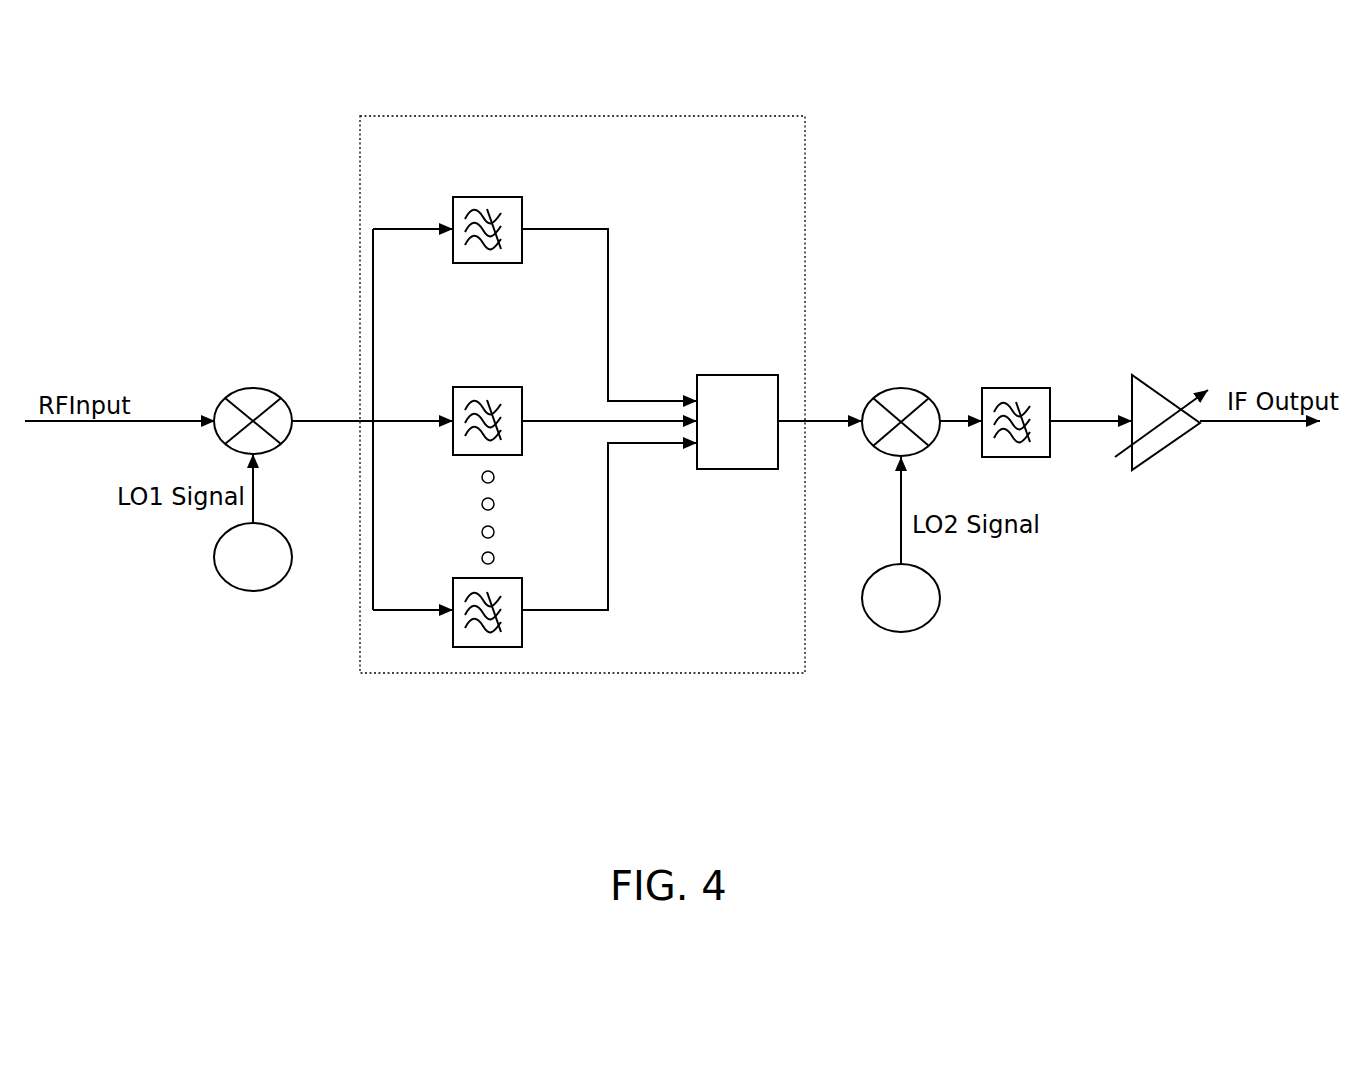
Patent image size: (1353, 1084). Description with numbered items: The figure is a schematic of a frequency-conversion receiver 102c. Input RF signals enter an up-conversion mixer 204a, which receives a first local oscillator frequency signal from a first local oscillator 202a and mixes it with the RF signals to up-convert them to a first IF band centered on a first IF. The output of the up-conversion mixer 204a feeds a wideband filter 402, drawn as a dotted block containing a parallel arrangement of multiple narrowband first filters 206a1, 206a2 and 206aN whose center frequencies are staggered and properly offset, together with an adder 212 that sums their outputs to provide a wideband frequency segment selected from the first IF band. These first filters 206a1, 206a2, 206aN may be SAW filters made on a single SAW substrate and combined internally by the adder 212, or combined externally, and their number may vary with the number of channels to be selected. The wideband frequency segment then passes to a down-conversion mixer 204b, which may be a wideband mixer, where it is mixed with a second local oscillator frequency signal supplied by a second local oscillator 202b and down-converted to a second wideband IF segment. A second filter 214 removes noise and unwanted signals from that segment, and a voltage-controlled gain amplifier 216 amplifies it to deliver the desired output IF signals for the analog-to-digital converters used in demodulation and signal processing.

The frequency-conversion receiver 102c is at (145, 713).
The first local oscillator 202a is at (252, 591).
The second local oscillator 202b is at (901, 632).
The up-conversion mixer 204a is at (252, 387).
The down-conversion mixer 204b is at (901, 388).
The first filter 206a1 is at (487, 197).
The first filter 206a2 is at (487, 388).
The first filter 206aN is at (487, 578).
The adder 212 is at (738, 375).
The second filter 214 is at (1018, 388).
The voltage-controlled gain amplifier 216 is at (1163, 450).
The wideband filter 402 is at (583, 673).